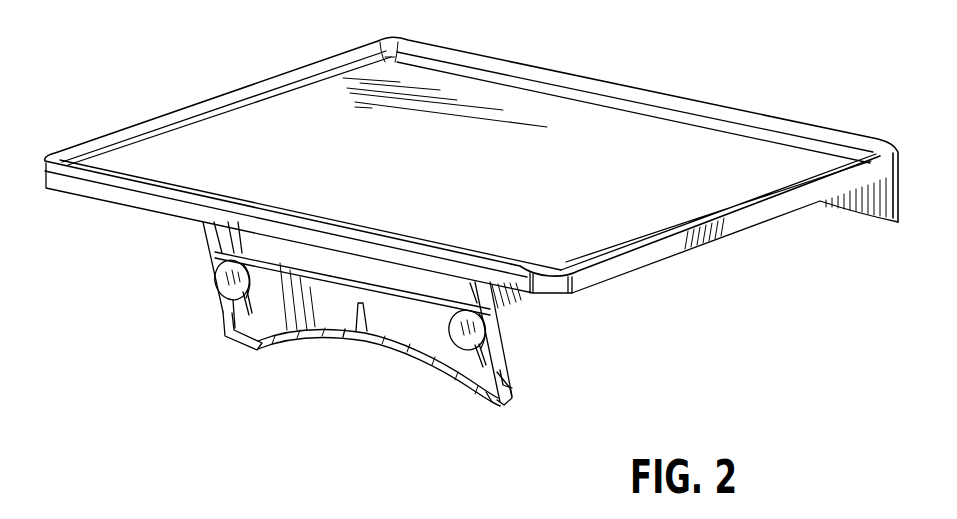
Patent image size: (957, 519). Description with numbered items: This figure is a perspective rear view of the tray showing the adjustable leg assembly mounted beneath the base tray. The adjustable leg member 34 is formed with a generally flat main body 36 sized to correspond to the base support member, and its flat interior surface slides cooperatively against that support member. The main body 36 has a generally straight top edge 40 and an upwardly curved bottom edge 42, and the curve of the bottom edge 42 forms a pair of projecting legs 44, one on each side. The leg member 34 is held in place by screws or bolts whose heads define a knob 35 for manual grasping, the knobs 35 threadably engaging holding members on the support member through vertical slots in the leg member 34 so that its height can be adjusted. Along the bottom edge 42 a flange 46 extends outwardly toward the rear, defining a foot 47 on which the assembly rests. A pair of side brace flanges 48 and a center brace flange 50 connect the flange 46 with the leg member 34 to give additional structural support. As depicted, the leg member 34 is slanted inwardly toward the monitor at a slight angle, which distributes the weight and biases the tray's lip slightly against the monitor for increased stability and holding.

The adjustable leg member 34 is at (278, 316).
The knob 35 is at (493, 345).
The main body 36 is at (420, 333).
The top edge 40 is at (306, 263).
The bottom edge 42 is at (373, 342).
The projecting legs 44 is at (485, 400).
The flange 46 is at (437, 378).
The foot 47 is at (507, 396).
The side brace flanges 48 is at (228, 330).
The center brace flange 50 is at (344, 320).